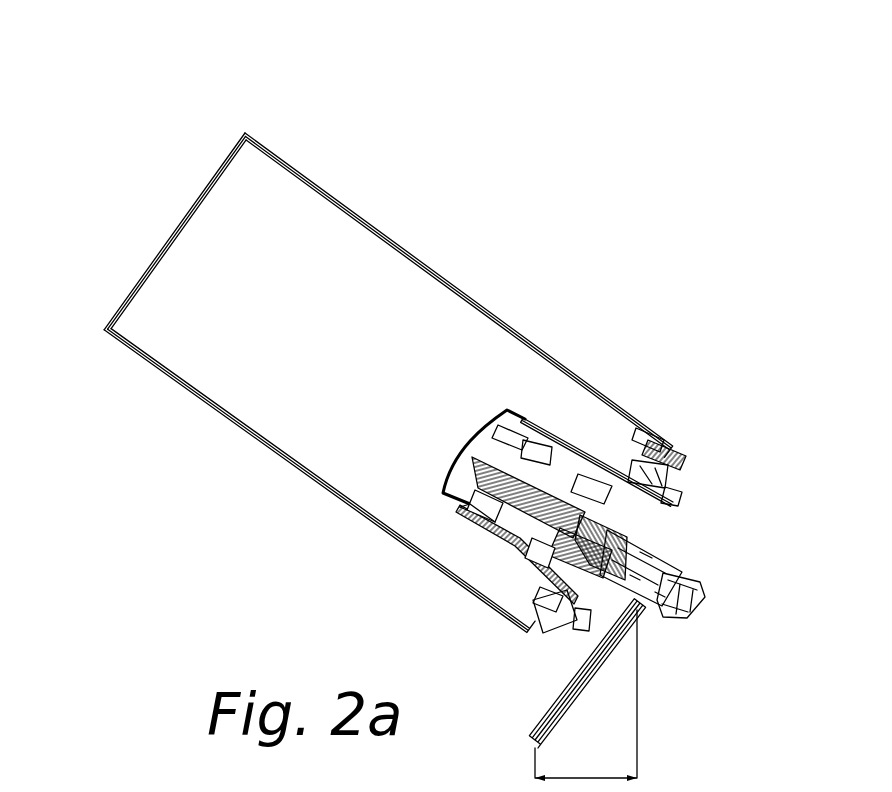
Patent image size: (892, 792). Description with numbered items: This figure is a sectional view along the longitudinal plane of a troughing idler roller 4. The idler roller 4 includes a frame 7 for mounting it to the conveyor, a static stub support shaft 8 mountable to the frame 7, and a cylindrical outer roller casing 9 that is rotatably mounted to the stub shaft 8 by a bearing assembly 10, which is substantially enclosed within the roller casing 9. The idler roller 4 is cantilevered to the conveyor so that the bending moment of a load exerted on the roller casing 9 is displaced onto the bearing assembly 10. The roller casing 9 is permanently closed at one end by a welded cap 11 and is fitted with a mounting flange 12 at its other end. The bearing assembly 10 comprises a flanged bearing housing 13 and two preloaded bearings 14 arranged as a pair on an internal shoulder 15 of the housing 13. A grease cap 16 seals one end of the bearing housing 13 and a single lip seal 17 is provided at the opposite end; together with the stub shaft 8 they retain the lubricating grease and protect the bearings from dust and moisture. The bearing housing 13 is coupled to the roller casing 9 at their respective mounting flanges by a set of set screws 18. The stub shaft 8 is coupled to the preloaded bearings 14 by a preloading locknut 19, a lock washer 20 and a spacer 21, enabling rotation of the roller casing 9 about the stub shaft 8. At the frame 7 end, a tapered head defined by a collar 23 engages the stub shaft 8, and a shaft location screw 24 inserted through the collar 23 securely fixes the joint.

The troughing idler roller 4 is at (455, 128).
The frame 7 is at (608, 693).
The static stub support shaft 8 is at (653, 532).
The cylindrical outer roller casing 9 is at (327, 188).
The bearing assembly 10 is at (456, 560).
The welded cap 11 is at (152, 253).
The mounting flange 12 is at (672, 440).
The flanged bearing housing 13 is at (550, 428).
The preloaded bearings 14 is at (537, 448).
The internal shoulder 15 is at (617, 468).
The grease cap 16 is at (452, 492).
The single lip seal 17 is at (643, 428).
The set screws 18 is at (672, 493).
The preloading locknut 19 is at (470, 487).
The lock washer 20 is at (500, 415).
The spacer 21 is at (470, 515).
The collar 23 is at (677, 558).
The shaft location screw 24 is at (687, 620).